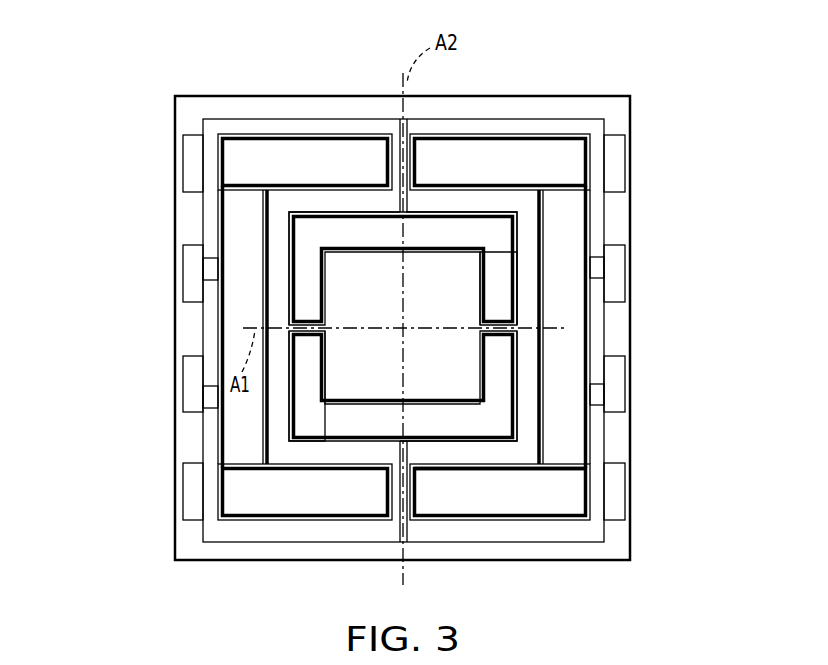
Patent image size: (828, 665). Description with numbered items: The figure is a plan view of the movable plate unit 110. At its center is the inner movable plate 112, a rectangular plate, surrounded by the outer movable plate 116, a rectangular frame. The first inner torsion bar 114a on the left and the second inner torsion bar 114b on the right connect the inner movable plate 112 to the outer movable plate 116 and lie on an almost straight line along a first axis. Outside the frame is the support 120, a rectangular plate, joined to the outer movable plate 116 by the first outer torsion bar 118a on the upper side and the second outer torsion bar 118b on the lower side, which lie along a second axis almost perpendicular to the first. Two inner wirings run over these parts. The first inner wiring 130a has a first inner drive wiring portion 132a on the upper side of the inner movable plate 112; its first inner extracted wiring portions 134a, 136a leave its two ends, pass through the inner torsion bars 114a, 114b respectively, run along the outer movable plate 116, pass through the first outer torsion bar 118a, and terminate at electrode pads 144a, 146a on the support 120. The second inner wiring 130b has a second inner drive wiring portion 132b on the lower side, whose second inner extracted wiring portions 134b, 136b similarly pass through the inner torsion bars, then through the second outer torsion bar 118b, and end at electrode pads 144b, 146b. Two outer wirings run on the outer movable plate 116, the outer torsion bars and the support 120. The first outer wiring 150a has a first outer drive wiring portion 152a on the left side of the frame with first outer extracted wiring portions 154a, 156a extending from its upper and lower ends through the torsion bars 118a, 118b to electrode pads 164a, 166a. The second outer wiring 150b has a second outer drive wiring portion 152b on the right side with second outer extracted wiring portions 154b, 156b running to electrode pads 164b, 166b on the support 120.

The movable plate unit 110 is at (122, 86).
The support 120 is at (223, 110).
The inner movable plate 112 is at (340, 272).
The first inner torsion bar 114a is at (311, 338).
The second inner torsion bar 114b is at (488, 318).
The outer movable plate 116 is at (528, 357).
The first outer torsion bar 118a is at (387, 162).
The second outer torsion bar 118b is at (422, 495).
The first inner wiring 130a is at (583, 23).
The first inner drive wiring portion 132a is at (423, 252).
The first inner extracted wiring portion 134a is at (367, 212).
The first inner extracted wiring portion 136a is at (493, 212).
The second inner wiring 130b is at (696, 428).
The second inner drive wiring portion 132b is at (450, 416).
The second inner extracted wiring portion 134b is at (420, 470).
The second inner extracted wiring portion 136b is at (467, 443).
The electrode pad 144a is at (186, 160).
The electrode pad 144b is at (184, 502).
The electrode pad 146a is at (622, 158).
The electrode pad 146b is at (620, 513).
The first outer wiring 150a is at (88, 282).
The first outer drive wiring portion 152a is at (262, 308).
The first outer extracted wiring portion 154a is at (217, 258).
The first outer extracted wiring portion 156a is at (217, 412).
The second outer wiring 150b is at (750, 257).
The second outer drive wiring portion 152b is at (541, 308).
The second outer extracted wiring portion 154b is at (618, 256).
The second outer extracted wiring portion 156b is at (590, 398).
The electrode pad 164a is at (184, 253).
The electrode pad 164b is at (594, 260).
The electrode pad 166a is at (184, 405).
The electrode pad 166b is at (623, 400).